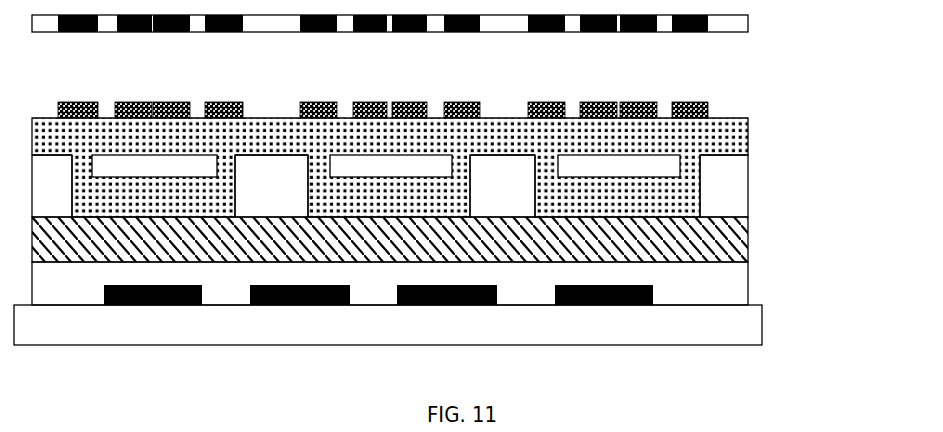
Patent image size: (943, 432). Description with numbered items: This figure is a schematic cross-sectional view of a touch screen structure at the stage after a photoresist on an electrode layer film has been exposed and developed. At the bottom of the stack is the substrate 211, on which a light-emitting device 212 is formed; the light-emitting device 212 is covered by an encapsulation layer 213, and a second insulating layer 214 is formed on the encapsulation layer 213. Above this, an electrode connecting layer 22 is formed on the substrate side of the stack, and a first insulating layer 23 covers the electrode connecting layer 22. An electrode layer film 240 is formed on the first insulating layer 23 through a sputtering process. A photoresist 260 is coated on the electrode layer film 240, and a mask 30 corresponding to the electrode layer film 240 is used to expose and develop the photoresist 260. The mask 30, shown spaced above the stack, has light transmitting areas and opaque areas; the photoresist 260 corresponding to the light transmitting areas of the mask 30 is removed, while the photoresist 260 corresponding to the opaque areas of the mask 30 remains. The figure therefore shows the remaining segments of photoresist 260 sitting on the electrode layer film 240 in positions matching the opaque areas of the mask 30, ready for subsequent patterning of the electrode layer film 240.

The mask 30 is at (748, 24).
The photoresist 260 is at (708, 106).
The electrode layer film 240 is at (708, 135).
The first insulating layer 23 is at (712, 166).
The electrode connecting layer 22 is at (682, 199).
The second insulating layer 214 is at (723, 242).
The encapsulation layer 213 is at (723, 275).
The light-emitting device 212 is at (653, 298).
The substrate 211 is at (625, 328).